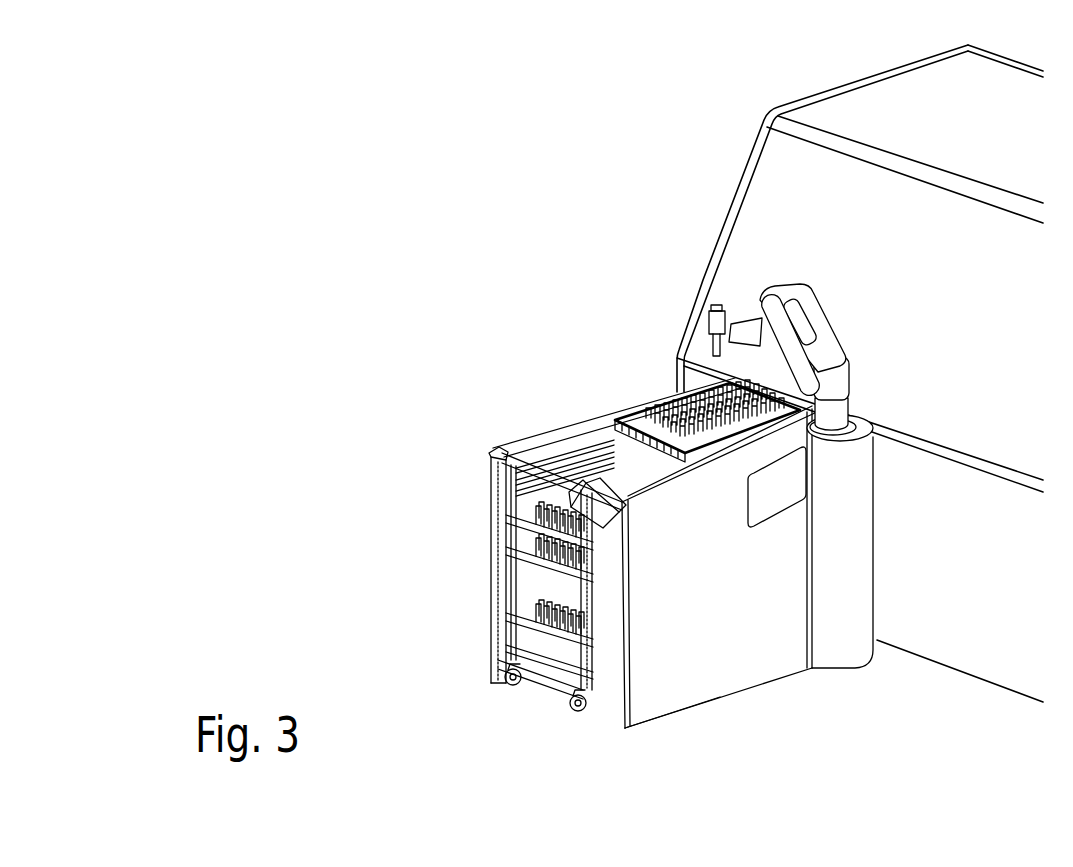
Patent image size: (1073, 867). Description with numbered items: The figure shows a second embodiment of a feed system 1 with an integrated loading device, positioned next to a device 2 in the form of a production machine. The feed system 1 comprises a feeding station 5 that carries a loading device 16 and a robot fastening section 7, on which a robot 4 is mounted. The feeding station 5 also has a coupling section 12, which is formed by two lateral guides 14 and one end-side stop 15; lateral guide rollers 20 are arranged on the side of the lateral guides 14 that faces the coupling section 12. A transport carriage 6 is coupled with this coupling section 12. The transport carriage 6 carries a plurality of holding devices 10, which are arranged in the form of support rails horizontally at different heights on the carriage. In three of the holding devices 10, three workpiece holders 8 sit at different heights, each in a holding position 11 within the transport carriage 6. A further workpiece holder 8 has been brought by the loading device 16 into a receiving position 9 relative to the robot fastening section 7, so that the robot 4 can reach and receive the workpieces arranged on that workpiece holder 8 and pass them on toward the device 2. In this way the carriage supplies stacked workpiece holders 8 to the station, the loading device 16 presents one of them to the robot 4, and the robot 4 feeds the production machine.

The feed system 1 is at (522, 230).
The device 2 is at (1040, 352).
The robot 4 is at (785, 286).
The feeding station 5 is at (747, 577).
The transport carriage 6 is at (532, 675).
The robot fastening section 7 is at (858, 433).
The workpiece holder 8 is at (658, 395).
The receiving position 9 is at (704, 380).
The holding device 10 is at (575, 475).
The holding position 11 is at (589, 550).
The coupling section 12 is at (557, 703).
The lateral guide 14 is at (489, 490).
The end-side stop 15 is at (740, 350).
The loading device 16 is at (622, 413).
The lateral guide rollers 20 is at (676, 398).